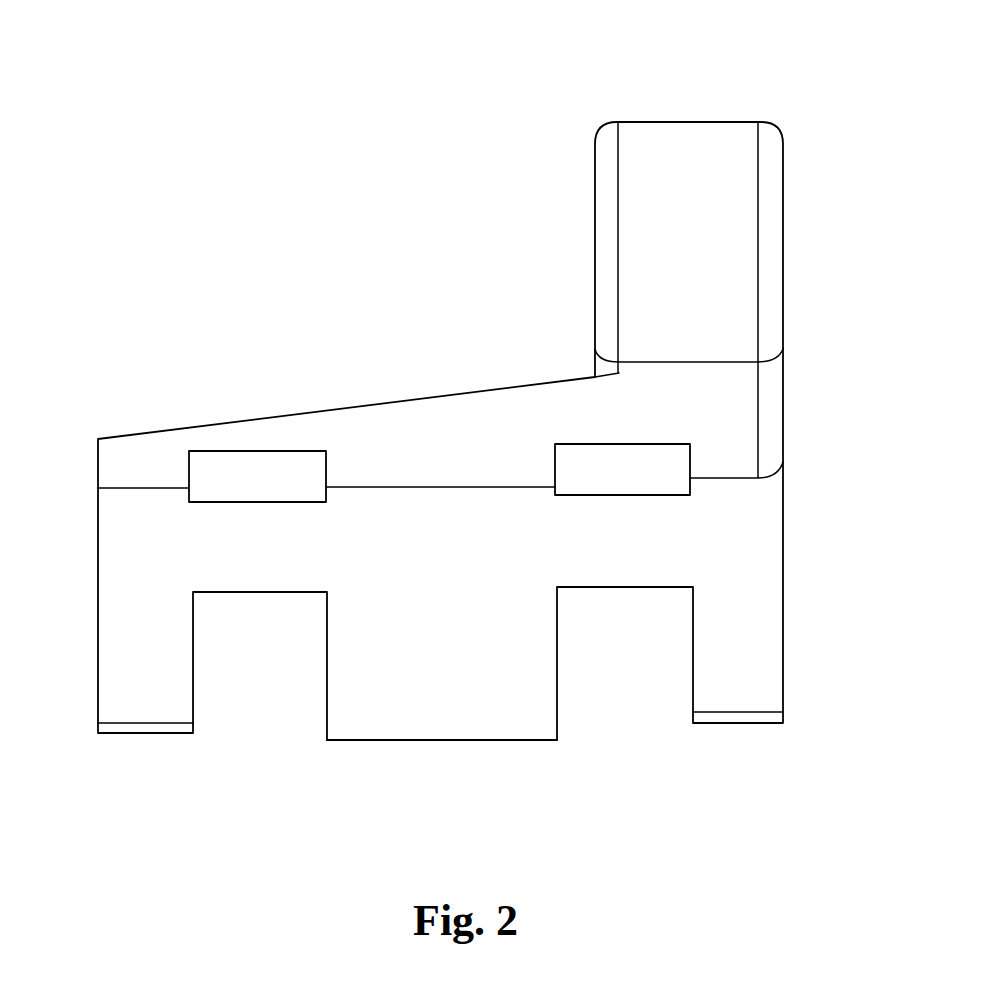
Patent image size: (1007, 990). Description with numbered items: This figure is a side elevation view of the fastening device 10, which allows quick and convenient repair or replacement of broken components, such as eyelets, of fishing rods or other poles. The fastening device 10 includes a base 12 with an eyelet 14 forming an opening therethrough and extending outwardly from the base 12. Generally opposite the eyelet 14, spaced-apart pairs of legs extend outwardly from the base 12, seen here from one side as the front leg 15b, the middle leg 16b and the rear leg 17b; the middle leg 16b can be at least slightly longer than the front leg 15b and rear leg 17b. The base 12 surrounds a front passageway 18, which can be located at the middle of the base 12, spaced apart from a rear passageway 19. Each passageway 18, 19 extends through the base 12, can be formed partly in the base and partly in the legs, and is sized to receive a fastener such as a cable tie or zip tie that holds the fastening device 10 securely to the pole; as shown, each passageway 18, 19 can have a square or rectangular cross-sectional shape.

The fastening device 10 is at (262, 184).
The base 12 is at (733, 413).
The eyelet 14 is at (680, 147).
The front passageway 18 is at (673, 473).
The rear passageway 19 is at (213, 484).
The front leg 15b is at (740, 640).
The middle leg 16b is at (465, 698).
The rear leg 17b is at (130, 688).